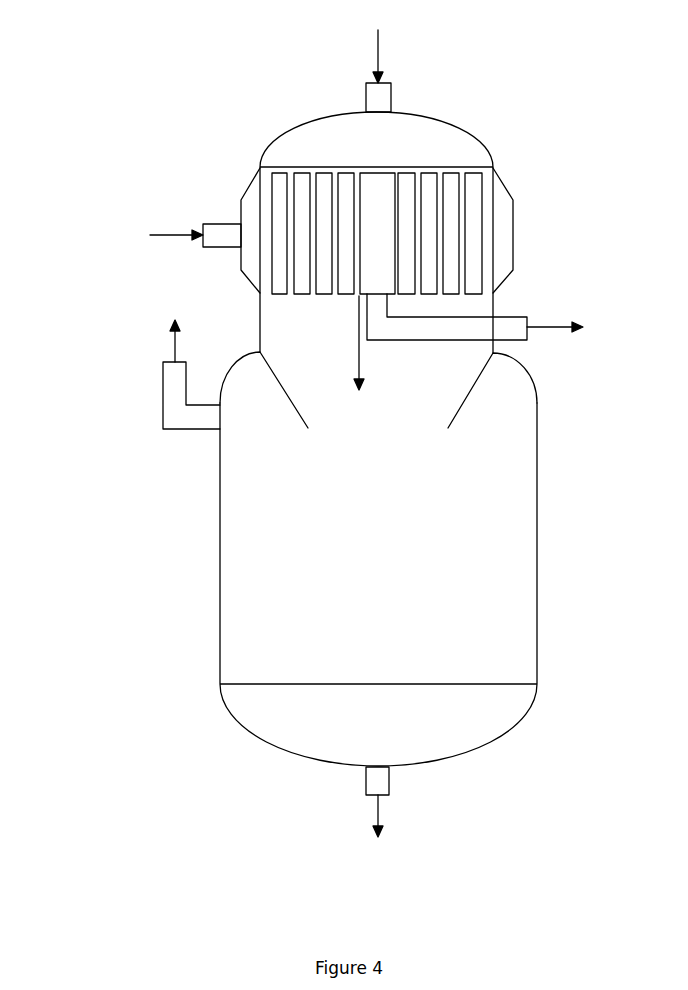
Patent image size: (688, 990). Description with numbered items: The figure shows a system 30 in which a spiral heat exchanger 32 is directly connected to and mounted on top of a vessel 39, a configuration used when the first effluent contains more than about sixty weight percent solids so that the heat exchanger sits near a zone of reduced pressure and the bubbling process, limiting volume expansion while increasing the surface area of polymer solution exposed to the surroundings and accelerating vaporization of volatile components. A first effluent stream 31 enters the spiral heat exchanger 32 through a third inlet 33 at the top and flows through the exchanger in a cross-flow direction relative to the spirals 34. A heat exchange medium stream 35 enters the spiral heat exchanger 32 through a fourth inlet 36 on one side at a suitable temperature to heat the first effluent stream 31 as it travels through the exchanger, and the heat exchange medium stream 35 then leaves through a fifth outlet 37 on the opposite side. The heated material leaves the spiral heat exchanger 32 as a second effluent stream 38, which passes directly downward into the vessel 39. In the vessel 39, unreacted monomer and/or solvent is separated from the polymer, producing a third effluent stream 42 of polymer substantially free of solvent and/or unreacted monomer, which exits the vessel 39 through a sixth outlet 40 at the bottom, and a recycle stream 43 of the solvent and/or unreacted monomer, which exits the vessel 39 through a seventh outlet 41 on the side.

The system 30 is at (100, 177).
The first effluent stream 31 is at (383, 45).
The spiral heat exchanger 32 is at (265, 180).
The third inlet 33 is at (378, 97).
The spirals 34 is at (472, 188).
The heat exchange medium stream 35 is at (368, 280).
The fourth inlet 36 is at (222, 235).
The fifth outlet 37 is at (511, 325).
The second effluent stream 38 is at (362, 355).
The vessel 39 is at (267, 535).
The sixth outlet 40 is at (377, 785).
The seventh outlet 41 is at (171, 397).
The third effluent stream 42 is at (379, 825).
The recycle stream 43 is at (179, 329).